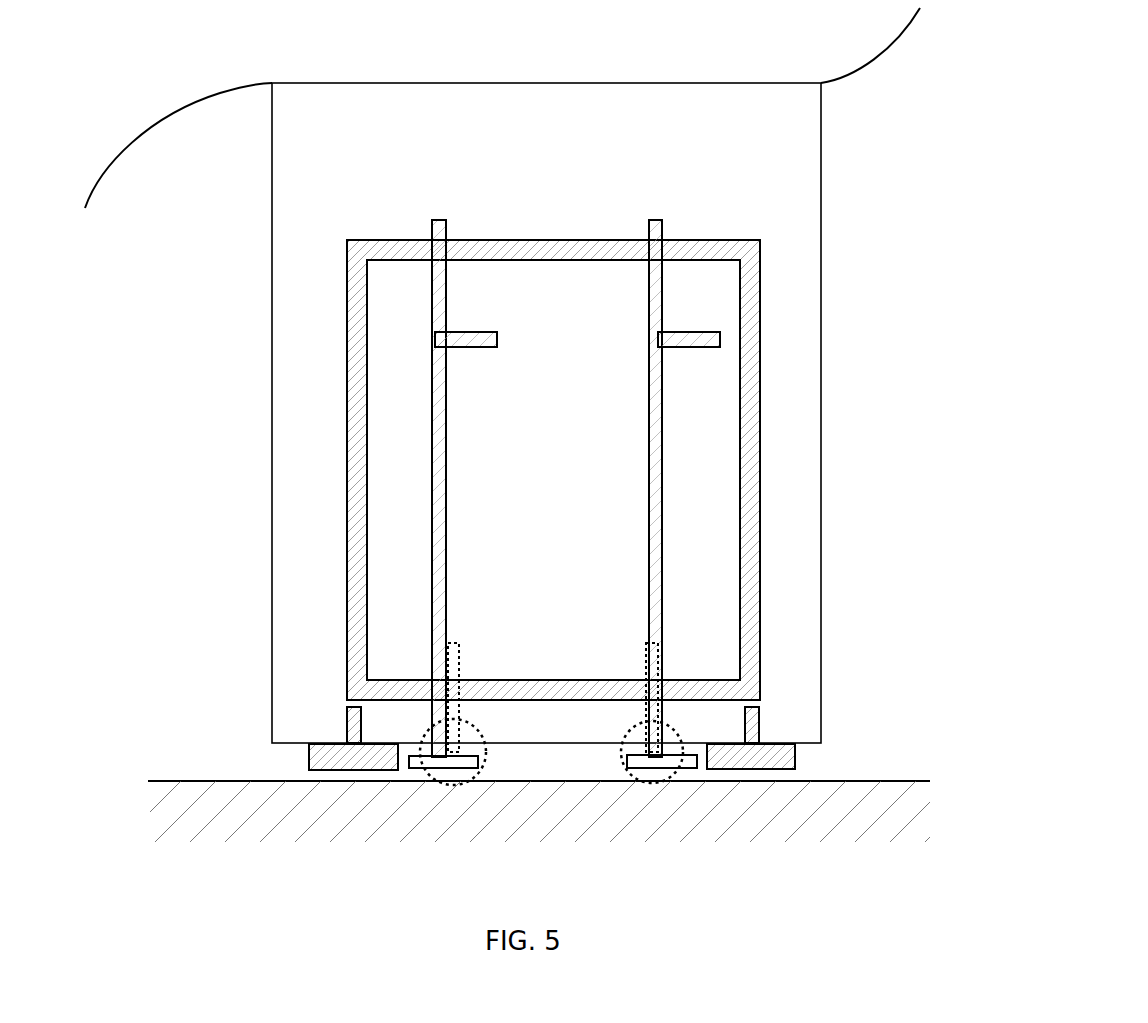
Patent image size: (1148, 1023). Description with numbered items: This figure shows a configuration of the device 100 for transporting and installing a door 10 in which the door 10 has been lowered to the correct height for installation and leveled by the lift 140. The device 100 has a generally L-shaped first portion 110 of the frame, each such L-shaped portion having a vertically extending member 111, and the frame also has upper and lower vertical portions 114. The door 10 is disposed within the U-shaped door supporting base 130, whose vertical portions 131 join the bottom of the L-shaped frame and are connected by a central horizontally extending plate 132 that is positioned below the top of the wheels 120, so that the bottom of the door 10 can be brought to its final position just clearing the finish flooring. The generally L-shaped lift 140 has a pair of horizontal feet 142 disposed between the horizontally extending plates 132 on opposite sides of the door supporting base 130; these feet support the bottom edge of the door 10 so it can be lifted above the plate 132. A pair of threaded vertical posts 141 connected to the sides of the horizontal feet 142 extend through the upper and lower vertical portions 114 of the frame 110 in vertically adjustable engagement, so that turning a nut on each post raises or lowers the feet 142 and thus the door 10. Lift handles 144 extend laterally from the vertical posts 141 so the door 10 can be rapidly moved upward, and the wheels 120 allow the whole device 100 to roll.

The device 100 is at (340, 168).
The door 10 is at (522, 164).
The first portion 110 is at (566, 429).
The vertically extending member 111 is at (760, 470).
The upper and lower vertical portions 114 is at (517, 262).
The lift 140 is at (445, 290).
The vertical posts 141 is at (660, 533).
The horizontal feet 142 is at (470, 753).
The lift handles 144 is at (688, 332).
The door supporting base 130 is at (431, 745).
The vertical portions 131 is at (347, 725).
The horizontally extending plate 132 is at (353, 770).
The wheels 120 is at (652, 782).